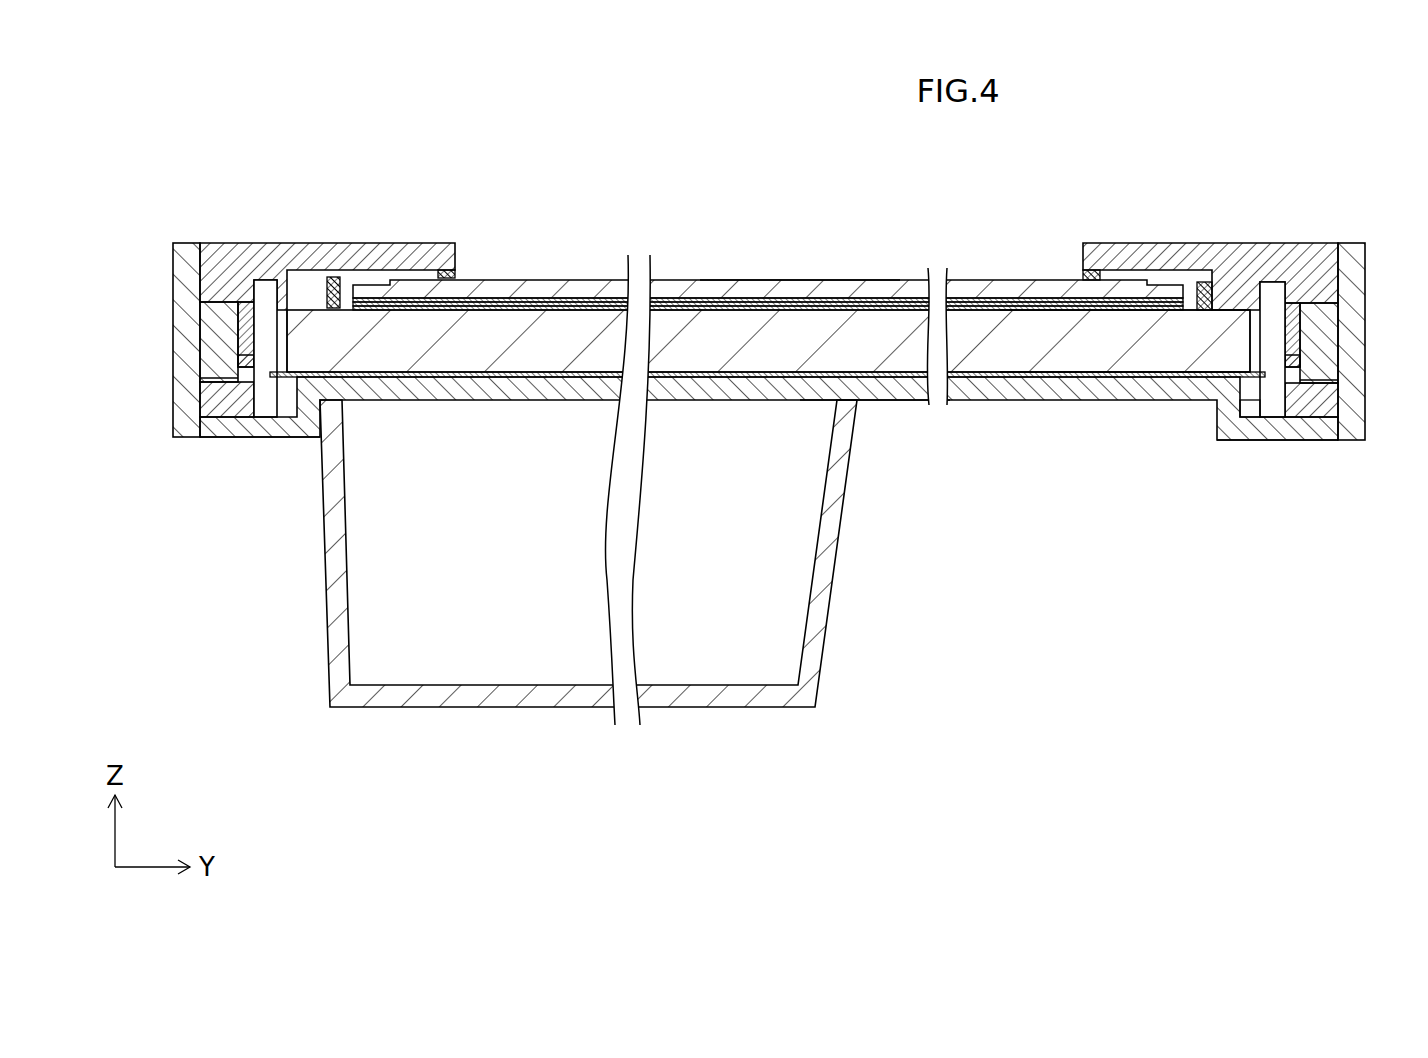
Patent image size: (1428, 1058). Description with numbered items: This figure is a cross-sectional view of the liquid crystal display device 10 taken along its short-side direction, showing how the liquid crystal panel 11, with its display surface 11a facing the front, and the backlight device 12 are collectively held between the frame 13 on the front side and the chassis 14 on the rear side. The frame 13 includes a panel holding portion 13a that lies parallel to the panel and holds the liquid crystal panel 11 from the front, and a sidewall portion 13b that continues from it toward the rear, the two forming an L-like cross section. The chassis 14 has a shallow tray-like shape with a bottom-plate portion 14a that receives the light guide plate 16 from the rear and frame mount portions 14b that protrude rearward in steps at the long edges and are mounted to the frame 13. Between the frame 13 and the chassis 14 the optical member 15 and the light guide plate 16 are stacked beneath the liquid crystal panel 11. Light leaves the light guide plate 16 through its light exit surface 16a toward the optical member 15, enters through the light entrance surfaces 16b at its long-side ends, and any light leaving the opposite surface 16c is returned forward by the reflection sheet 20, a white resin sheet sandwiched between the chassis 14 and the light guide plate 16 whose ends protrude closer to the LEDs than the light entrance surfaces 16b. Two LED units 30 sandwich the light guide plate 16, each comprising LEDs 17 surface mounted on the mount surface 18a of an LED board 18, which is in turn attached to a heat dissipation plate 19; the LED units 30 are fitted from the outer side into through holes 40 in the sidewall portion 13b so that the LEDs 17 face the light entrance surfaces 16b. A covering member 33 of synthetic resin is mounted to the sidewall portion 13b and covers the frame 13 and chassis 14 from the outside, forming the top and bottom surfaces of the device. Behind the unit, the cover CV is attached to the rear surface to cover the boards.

The liquid crystal display device 10 is at (715, 174).
The liquid crystal panel 11 is at (697, 291).
The display surface of liquid crystal panel 11a is at (778, 281).
The backlight device 12 is at (1085, 495).
The frame 13 is at (402, 250).
The panel holding portion 13a is at (341, 250).
The sidewall portion 13b is at (213, 403).
The chassis 14 is at (1052, 399).
The bottom-plate portion 14a is at (889, 392).
The frame mount portions 14b is at (231, 426).
The optical member 15 is at (880, 309).
The light guide plate 16 is at (992, 350).
The light exit surface 16a is at (1108, 305).
The light entrance surface 16b is at (283, 368).
The opposite surface 16c is at (1162, 376).
The LED 17 is at (262, 330).
The LED board 18 is at (243, 322).
The mount surface 18a is at (261, 365).
The heat dissipation plate 19 is at (217, 327).
The reflection sheet 20 is at (1257, 422).
The LED unit 30 is at (207, 144).
The covering member 33 is at (183, 256).
The through hole 40 is at (215, 377).
The cover CV is at (515, 708).